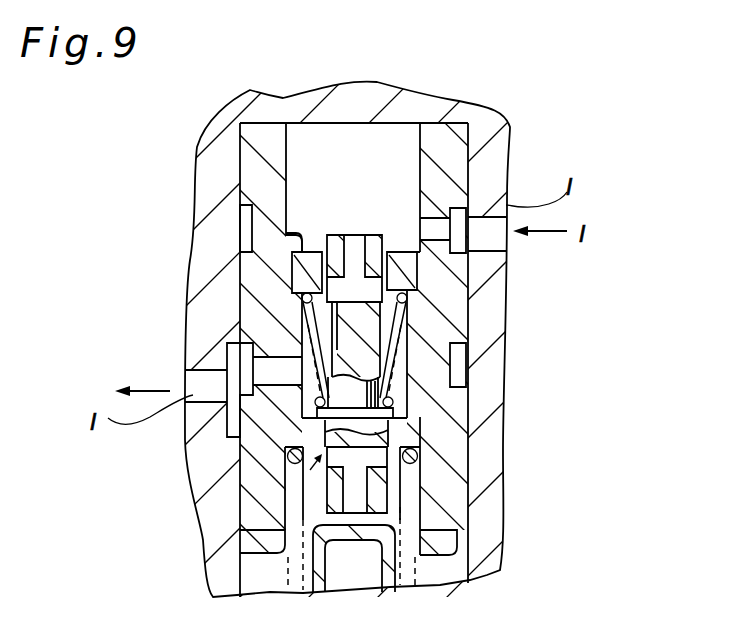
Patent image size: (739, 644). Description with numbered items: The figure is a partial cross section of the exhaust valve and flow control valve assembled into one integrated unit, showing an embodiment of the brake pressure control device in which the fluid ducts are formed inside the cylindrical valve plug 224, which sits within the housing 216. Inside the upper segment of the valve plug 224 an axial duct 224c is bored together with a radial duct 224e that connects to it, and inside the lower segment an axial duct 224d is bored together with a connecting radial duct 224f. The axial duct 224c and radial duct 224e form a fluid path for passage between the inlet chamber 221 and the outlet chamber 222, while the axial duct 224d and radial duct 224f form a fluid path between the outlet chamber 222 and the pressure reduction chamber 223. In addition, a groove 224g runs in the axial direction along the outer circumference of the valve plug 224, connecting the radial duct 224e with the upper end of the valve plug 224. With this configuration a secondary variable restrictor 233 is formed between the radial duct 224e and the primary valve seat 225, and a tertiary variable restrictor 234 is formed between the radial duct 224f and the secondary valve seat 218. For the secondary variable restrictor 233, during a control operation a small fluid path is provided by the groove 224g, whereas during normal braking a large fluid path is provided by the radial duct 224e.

The housing 216 is at (262, 132).
The secondary valve seat 218 is at (404, 414).
The inlet chamber 221 is at (292, 178).
The outlet chamber 222 is at (305, 402).
The pressure reduction chamber 223 is at (283, 527).
The valve plug 224 is at (370, 331).
The axial duct 224c is at (353, 243).
The axial duct 224d is at (358, 497).
The radial duct 224e is at (372, 290).
The radial duct 224f is at (418, 472).
The groove 224g is at (303, 322).
The primary valve seat 225 is at (297, 240).
The secondary variable restrictor 233 is at (313, 284).
The tertiary variable restrictor 234 is at (303, 480).